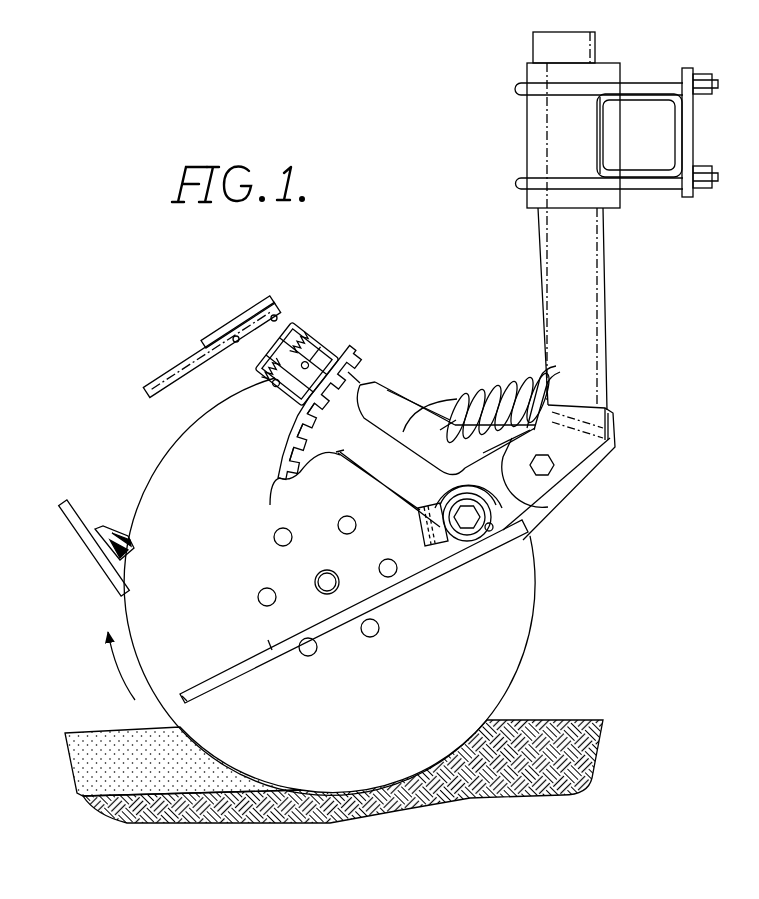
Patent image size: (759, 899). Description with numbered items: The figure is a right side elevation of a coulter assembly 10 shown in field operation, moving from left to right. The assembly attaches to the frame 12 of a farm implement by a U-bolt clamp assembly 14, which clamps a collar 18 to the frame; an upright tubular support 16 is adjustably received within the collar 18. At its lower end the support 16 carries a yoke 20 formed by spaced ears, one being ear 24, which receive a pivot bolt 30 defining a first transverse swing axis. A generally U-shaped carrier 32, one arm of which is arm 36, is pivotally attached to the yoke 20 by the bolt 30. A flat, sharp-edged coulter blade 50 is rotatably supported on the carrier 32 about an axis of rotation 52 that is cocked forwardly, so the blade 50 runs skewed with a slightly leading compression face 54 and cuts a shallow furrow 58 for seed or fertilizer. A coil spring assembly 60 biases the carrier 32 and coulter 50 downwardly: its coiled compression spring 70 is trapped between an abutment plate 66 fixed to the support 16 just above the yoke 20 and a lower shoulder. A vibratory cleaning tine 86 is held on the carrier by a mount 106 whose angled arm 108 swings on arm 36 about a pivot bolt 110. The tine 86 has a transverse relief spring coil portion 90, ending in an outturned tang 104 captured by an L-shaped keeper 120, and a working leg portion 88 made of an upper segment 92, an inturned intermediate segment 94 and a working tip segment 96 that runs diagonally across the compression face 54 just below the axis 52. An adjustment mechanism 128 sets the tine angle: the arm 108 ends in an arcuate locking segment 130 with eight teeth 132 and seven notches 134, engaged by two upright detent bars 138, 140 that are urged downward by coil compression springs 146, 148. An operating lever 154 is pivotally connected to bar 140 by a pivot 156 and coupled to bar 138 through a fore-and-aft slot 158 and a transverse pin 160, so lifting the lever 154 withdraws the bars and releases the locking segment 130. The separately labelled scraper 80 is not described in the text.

The coulter assembly 10 is at (425, 146).
The frame 12 is at (680, 120).
The U-bolt clamp assembly 14 is at (640, 78).
The upright tubular support 16 is at (585, 240).
The collar 18 is at (533, 115).
The yoke 20 is at (605, 462).
The ear 24 is at (583, 468).
The pivot bolt 30 is at (545, 470).
The carrier 32 is at (385, 392).
The arm 36 is at (420, 428).
The coulter blade 50 is at (148, 462).
The axis of rotation 52 is at (328, 582).
The compression face 54 is at (199, 587).
The furrow 58 is at (93, 742).
The coil spring assembly 60 is at (490, 368).
The abutment plate 66 is at (532, 365).
The coiled compression spring 70 is at (462, 395).
The scraper blade 80 is at (97, 553).
The vibratory cleaning tine 86 is at (386, 618).
The working leg portion 88 is at (333, 627).
The relief spring coil portion 90 is at (432, 480).
The upper segment 92 is at (430, 570).
The intermediate segment 94 is at (270, 645).
The working tip segment 96 is at (188, 700).
The outturned tang 104 is at (478, 520).
The mount 106 is at (340, 480).
The arm 108 is at (358, 458).
The pivot bolt 110 is at (492, 528).
The keeper 120 is at (414, 543).
The adjustment mechanism 128 is at (362, 345).
The locking segment 130 is at (288, 490).
The teeth 132 is at (282, 470).
The notches 134 is at (292, 438).
The detent bar 138 is at (280, 394).
The detent bar 140 is at (333, 358).
The coil compression spring 146 is at (262, 375).
The coil compression spring 148 is at (318, 340).
The operating lever 154 is at (160, 382).
The pivot 156 is at (275, 315).
The fore-and-aft slot 158 is at (212, 344).
The transverse pin 160 is at (236, 336).